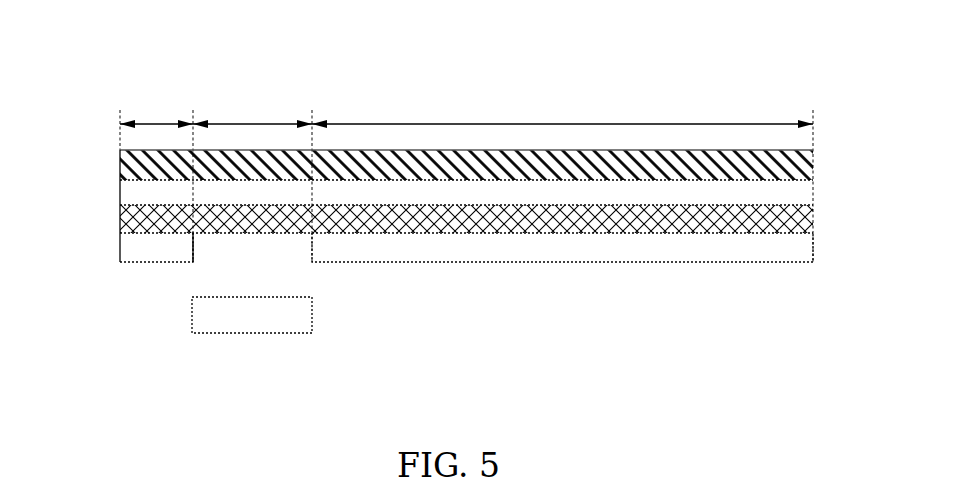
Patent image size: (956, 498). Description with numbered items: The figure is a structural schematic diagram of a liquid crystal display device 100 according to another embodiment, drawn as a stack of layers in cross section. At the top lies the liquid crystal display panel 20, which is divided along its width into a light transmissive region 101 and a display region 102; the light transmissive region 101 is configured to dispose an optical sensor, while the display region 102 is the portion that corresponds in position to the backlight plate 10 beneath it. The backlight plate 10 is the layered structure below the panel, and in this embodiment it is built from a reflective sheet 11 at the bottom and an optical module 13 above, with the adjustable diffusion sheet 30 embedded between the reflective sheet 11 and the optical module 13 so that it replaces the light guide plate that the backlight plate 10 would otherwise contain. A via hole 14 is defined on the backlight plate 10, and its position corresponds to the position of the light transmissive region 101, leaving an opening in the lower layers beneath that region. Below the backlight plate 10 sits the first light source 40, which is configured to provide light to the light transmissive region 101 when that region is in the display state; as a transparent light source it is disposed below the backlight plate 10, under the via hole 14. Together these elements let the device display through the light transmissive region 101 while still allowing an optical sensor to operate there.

The liquid crystal display device 100 is at (83, 26).
The backlight plate 10 is at (478, 357).
The reflective sheet 11 is at (120, 245).
The optical module 13 is at (120, 193).
The via hole 14 is at (255, 252).
The liquid crystal display panel 20 is at (120, 163).
The adjustable diffusion sheet 30 is at (813, 218).
The first light source 40 is at (312, 318).
The light transmissive region 101 is at (252, 112).
The display region 102 is at (466, 112).